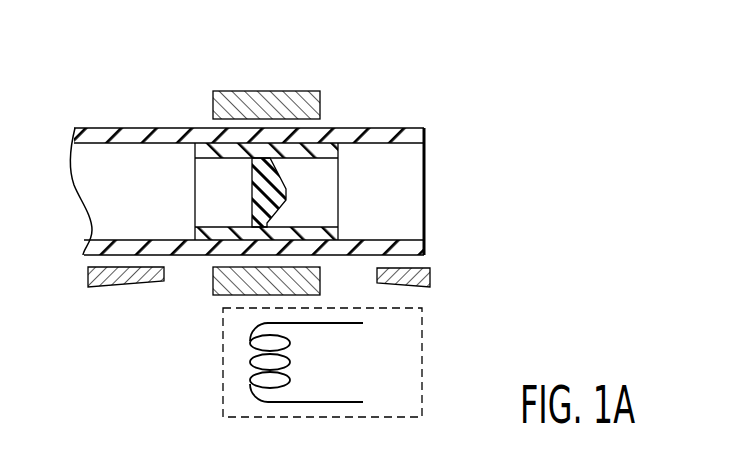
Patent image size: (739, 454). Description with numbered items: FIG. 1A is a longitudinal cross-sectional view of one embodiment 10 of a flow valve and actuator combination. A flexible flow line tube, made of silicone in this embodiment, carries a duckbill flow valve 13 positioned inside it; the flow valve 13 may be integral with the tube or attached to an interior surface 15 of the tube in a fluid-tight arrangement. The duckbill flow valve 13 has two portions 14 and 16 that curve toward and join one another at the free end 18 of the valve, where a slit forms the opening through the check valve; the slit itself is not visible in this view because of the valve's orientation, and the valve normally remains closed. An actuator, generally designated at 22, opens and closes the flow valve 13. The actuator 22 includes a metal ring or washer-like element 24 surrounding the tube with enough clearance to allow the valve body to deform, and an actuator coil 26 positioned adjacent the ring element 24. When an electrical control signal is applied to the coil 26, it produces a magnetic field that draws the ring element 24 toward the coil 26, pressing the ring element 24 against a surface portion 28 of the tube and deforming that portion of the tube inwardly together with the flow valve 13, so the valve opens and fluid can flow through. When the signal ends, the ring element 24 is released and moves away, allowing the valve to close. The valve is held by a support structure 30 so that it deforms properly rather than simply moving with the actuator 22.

The flow valve/actuator combination 10 is at (403, 77).
The flow valve 13 is at (222, 180).
The first portion of duckbill valve 14 is at (283, 182).
The interior surface of tube 15 is at (380, 144).
The second portion of duckbill valve 16 is at (278, 208).
The free end of valve 18 is at (288, 193).
The actuator 22 is at (203, 94).
The ring element 24 is at (280, 91).
The actuator coil 26 is at (222, 348).
The surface portion of tube 28 is at (108, 128).
The support structure 30 is at (128, 286).